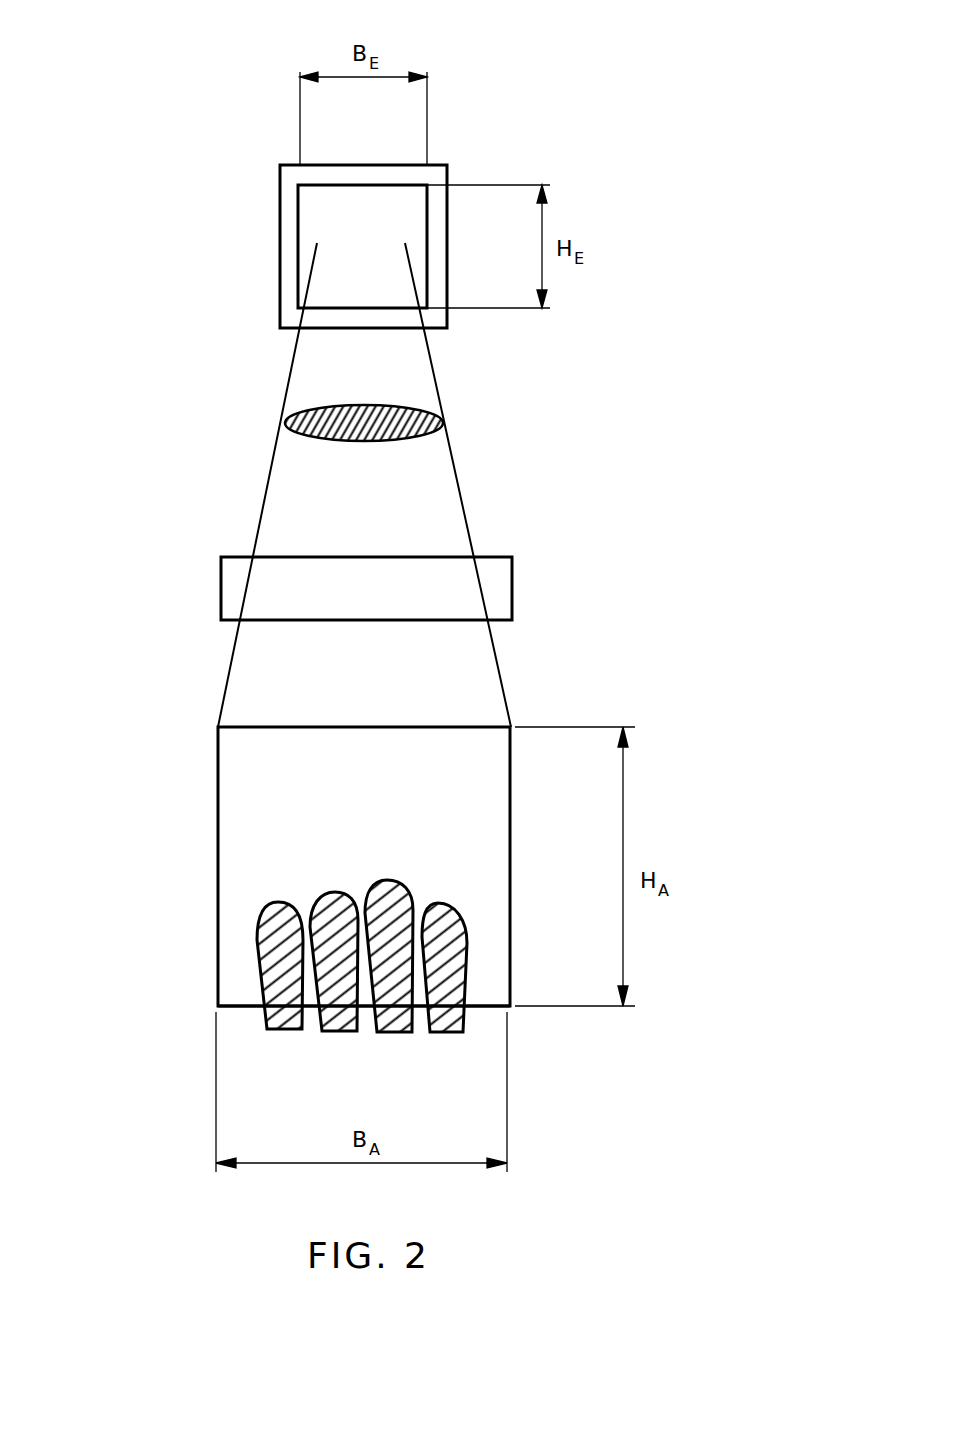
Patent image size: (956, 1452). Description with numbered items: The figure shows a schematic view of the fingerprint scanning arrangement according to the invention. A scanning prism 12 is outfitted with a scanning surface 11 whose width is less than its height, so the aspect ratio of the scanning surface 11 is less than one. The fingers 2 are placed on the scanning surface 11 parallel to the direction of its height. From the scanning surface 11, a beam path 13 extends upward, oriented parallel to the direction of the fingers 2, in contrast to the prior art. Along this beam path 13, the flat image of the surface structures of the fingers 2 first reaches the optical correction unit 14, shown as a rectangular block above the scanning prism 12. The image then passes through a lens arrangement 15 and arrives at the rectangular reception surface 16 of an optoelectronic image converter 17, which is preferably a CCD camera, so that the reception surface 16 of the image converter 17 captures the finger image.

The fingers 2 is at (391, 879).
The scanning surface 11 is at (242, 845).
The scanning prism 12 is at (208, 939).
The beam path 13 is at (235, 697).
The optical correction unit 14 is at (235, 582).
The lens arrangement 15 is at (285, 430).
The reception surface 16 is at (320, 207).
The optoelectronic image converter 17 is at (288, 315).